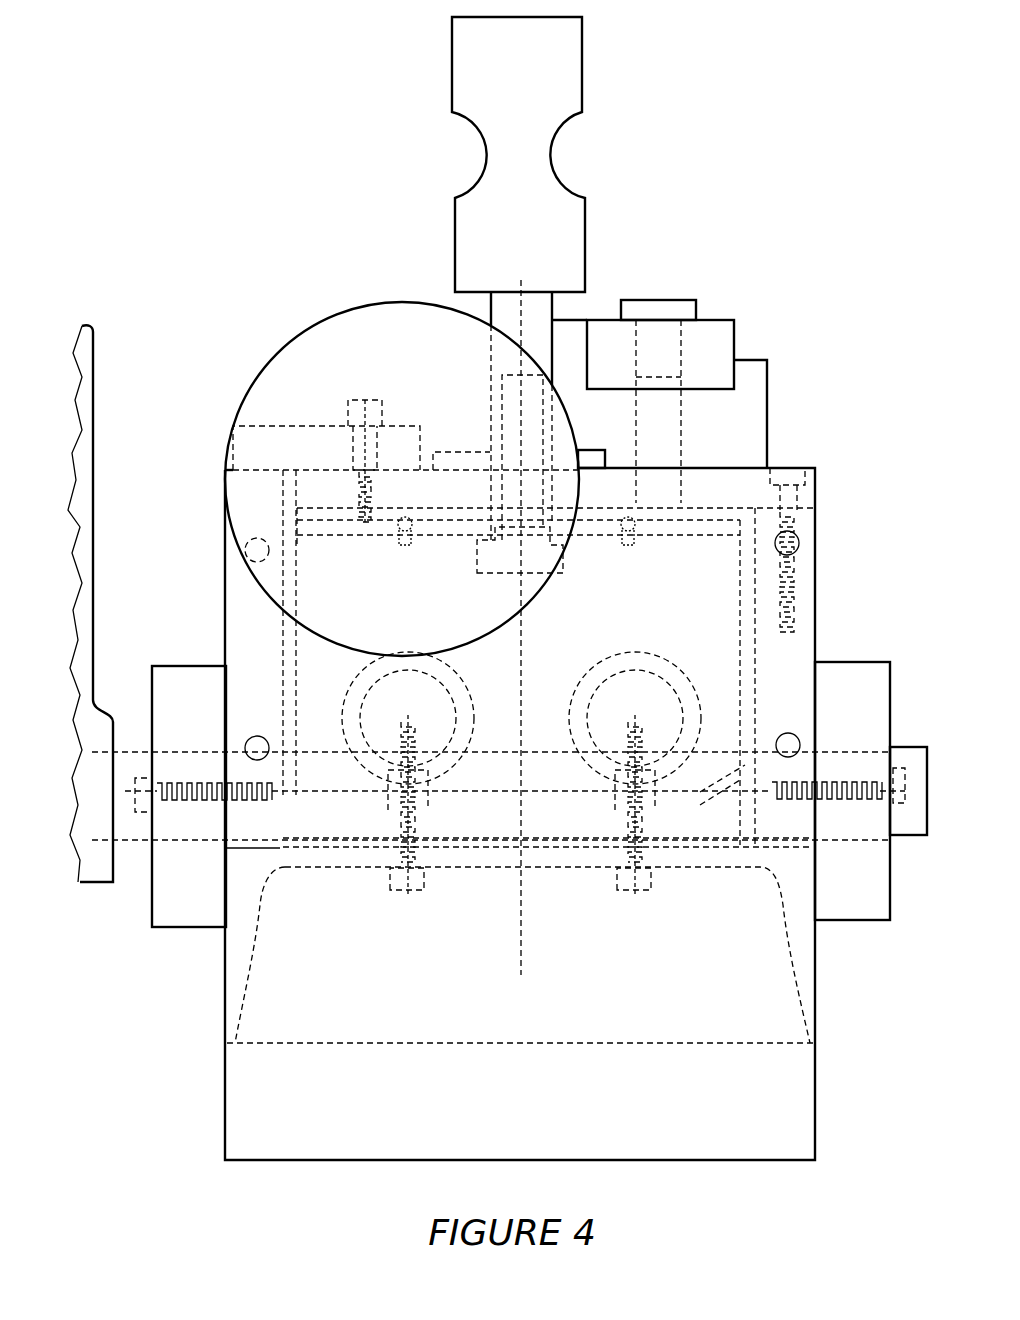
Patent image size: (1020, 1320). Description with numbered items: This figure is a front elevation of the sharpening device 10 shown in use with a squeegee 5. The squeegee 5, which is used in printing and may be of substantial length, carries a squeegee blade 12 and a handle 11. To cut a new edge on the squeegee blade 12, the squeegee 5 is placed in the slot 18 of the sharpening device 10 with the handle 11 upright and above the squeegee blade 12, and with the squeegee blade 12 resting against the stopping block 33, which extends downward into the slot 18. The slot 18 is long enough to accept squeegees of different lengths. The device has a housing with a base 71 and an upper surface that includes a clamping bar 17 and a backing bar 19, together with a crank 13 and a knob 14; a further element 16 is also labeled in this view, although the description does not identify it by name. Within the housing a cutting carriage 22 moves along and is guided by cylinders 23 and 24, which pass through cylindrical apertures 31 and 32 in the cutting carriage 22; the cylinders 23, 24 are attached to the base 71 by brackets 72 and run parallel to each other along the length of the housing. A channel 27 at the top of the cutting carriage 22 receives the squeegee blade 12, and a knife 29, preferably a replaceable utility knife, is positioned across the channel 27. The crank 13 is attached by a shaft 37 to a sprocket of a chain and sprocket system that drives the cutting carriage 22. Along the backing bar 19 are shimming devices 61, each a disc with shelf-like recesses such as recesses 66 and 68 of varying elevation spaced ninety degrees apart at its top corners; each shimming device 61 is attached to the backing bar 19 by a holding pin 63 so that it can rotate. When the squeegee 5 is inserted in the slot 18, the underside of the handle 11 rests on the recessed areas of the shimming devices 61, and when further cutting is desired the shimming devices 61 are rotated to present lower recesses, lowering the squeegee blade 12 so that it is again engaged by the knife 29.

The squeegee 5 is at (451, 99).
The sharpening device 10 is at (843, 943).
The handle 11 is at (558, 83).
The squeegee blade 12 is at (477, 296).
The crank 13 is at (87, 503).
The knob 14 is at (345, 328).
The slot 16 is at (263, 453).
The clamping bar 17 is at (400, 490).
The slot 18 is at (483, 487).
The backing bar 19 is at (628, 494).
The cutting carriage 22 is at (702, 612).
The cylinder 23 is at (385, 710).
The cylinder 24 is at (670, 715).
The channel 27 is at (548, 562).
The knife 29 is at (630, 500).
The cylindrical aperture 31 is at (360, 688).
The cylindrical aperture 32 is at (683, 672).
The stopping block 33 is at (580, 450).
The shaft 37 is at (145, 768).
The shimming device 61 is at (738, 328).
The holding pin 63 is at (657, 308).
The shelf-like recess 66 is at (757, 360).
The shelf-like recess 68 is at (657, 388).
The base 71 is at (358, 860).
The bracket 72 is at (480, 825).